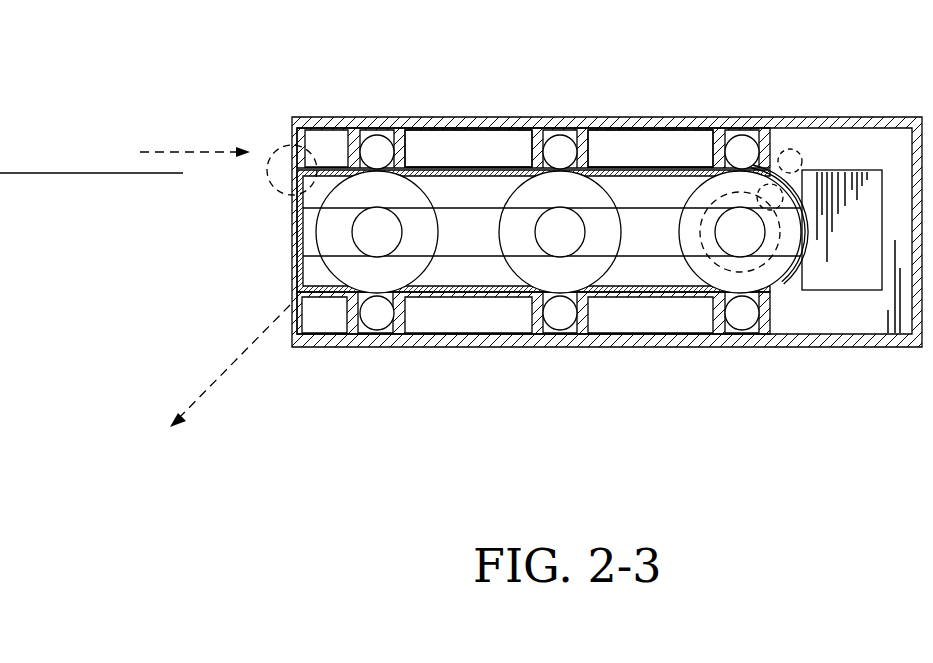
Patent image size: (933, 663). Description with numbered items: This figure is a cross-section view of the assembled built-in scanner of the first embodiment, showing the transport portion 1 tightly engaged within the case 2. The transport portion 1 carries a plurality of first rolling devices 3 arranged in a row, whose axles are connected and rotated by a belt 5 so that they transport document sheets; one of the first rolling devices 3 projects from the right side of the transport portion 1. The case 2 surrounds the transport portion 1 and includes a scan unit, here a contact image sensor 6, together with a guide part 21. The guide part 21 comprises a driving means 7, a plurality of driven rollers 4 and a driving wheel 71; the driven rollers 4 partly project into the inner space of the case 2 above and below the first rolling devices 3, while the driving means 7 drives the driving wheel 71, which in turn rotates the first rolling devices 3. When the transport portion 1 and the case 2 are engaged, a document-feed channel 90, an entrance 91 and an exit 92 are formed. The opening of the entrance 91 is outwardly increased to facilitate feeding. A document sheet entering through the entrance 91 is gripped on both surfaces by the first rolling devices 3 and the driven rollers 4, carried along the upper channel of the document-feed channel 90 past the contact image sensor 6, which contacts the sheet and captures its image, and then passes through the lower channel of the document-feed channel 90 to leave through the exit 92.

The transport portion 1 is at (323, 165).
The case 2 is at (878, 143).
The first rolling devices 3 is at (555, 279).
The driven rollers 4 is at (379, 148).
The belt 5 is at (470, 256).
The contact image sensor (CIS) 6 is at (845, 278).
The driving means 7 is at (797, 165).
The guide part 21 is at (466, 152).
The driving wheel 71 is at (751, 170).
The document-feed channel 90 is at (638, 166).
The entrance 91 is at (283, 165).
The exit 92 is at (290, 296).